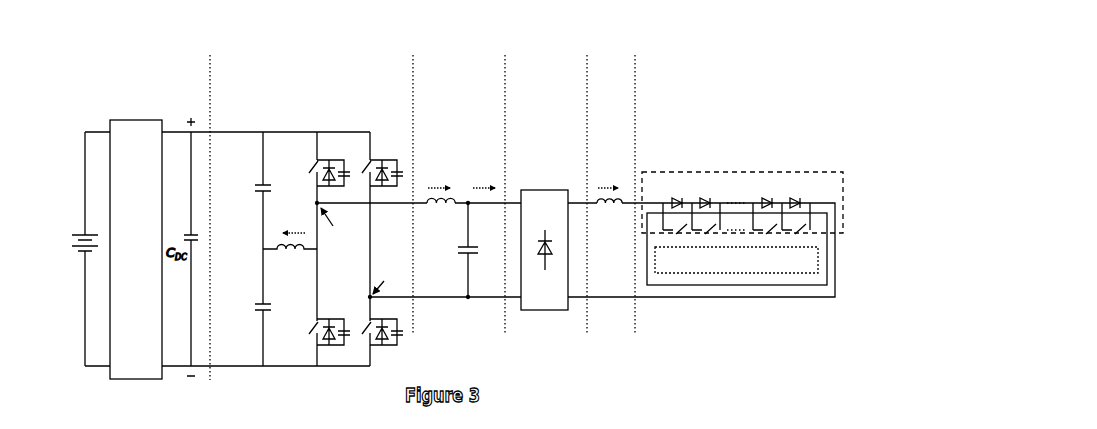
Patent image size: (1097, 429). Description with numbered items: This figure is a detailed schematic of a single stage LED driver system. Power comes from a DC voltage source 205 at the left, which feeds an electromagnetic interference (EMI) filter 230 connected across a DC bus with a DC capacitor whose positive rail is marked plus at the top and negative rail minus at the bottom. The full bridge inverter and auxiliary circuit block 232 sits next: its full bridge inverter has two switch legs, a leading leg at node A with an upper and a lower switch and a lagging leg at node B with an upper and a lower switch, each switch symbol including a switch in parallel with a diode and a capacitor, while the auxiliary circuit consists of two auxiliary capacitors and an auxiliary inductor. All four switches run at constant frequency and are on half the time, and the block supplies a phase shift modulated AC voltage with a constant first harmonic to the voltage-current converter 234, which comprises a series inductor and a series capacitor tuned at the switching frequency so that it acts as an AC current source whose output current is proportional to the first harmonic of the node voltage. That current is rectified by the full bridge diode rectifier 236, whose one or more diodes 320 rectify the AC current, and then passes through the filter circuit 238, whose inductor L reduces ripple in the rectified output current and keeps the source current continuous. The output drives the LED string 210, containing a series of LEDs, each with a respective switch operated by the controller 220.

The DC voltage source 205 is at (70, 264).
The electromagnetic interference (EMI) filter 230 is at (136, 249).
The full bridge inverter and auxiliary circuit block 232 is at (312, 217).
The voltage-current converter 234 is at (461, 186).
The diode rectifier 236 is at (545, 194).
The filter circuit 238 is at (609, 156).
The diode 320 is at (545, 264).
The LED string 210 is at (843, 207).
The controller 220 is at (736, 260).